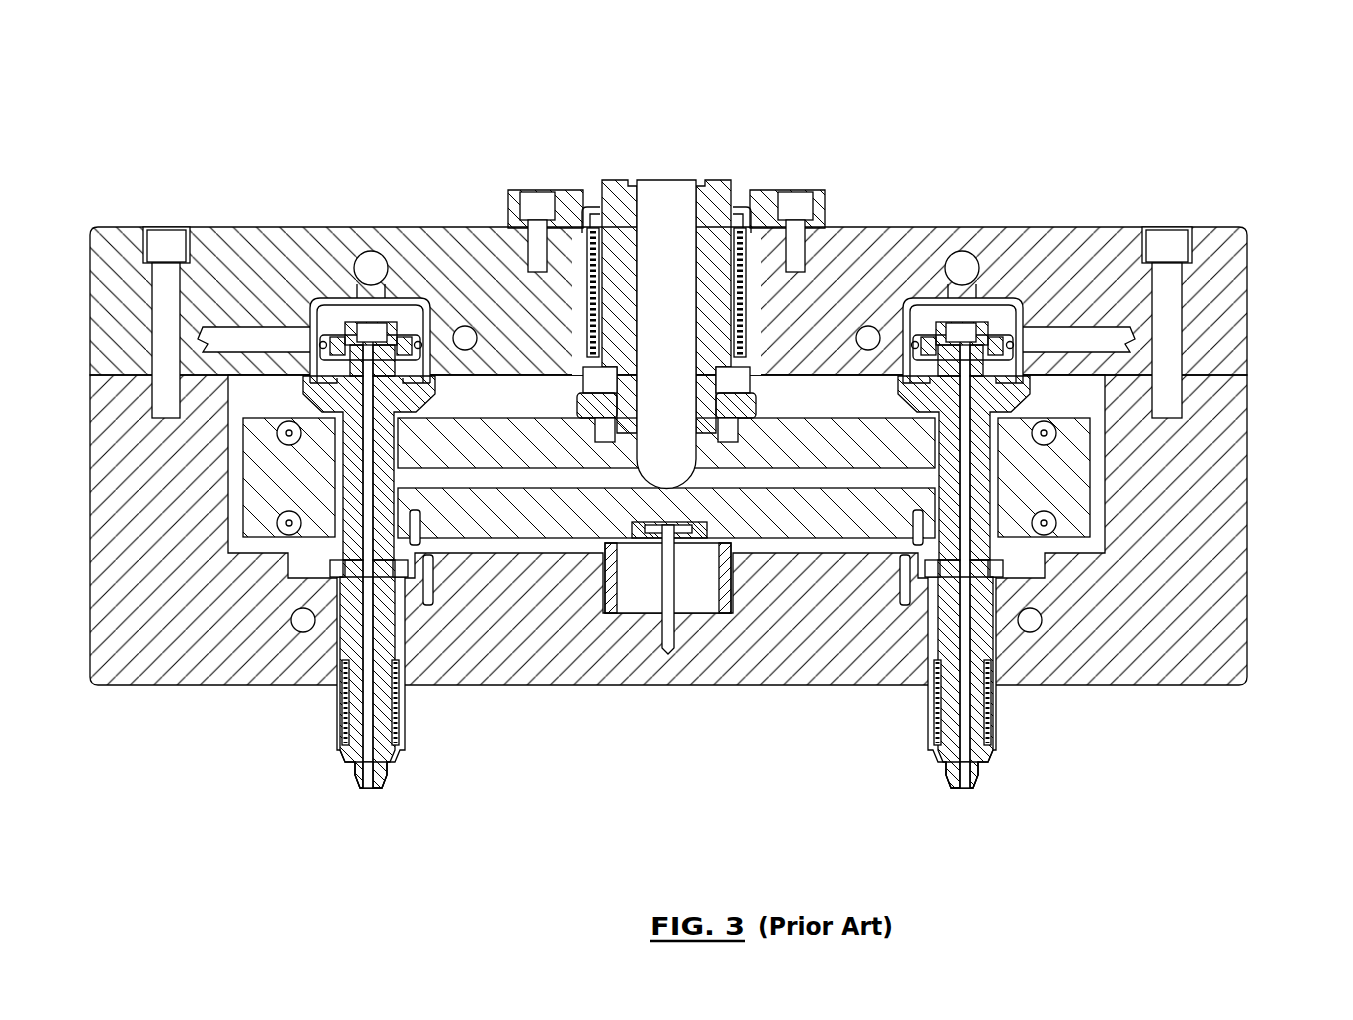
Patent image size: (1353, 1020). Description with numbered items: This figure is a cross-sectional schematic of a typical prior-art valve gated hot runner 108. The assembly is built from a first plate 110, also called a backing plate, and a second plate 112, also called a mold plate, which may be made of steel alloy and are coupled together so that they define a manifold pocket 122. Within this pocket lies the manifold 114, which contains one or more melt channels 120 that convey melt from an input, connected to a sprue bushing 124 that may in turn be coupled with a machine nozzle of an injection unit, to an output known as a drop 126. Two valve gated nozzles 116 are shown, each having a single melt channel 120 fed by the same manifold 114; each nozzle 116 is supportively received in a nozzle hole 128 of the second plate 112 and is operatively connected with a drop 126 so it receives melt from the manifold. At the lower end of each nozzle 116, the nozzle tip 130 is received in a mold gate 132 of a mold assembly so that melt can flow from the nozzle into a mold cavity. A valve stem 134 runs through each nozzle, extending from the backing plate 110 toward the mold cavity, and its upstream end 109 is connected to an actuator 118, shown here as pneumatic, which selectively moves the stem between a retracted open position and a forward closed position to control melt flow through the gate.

The valve gated hot runner 108 is at (704, 463).
The upstream end of the valve stem 109 is at (370, 343).
The first plate 110 is at (1224, 273).
The second plate 112 is at (1184, 652).
The manifold 114 is at (1053, 473).
The valve gated nozzle 116 is at (320, 728).
The actuator 118 is at (304, 289).
The melt channel 120 is at (822, 482).
The manifold pocket 122 is at (1073, 399).
The sprue bushing 124 is at (721, 205).
The drop 126 is at (978, 516).
The nozzle hole 128 is at (404, 657).
The nozzle tip 130 is at (357, 770).
The mold gate 132 is at (378, 800).
The valve stem 134 is at (368, 656).